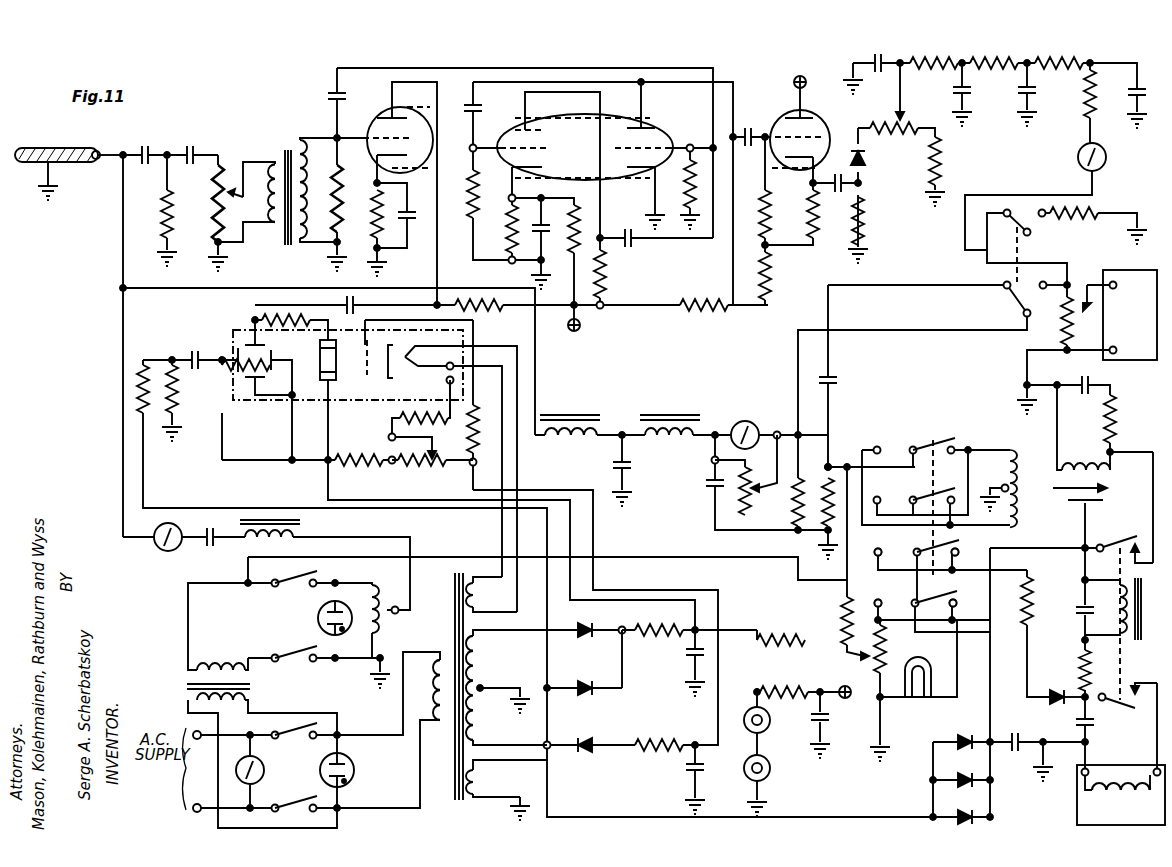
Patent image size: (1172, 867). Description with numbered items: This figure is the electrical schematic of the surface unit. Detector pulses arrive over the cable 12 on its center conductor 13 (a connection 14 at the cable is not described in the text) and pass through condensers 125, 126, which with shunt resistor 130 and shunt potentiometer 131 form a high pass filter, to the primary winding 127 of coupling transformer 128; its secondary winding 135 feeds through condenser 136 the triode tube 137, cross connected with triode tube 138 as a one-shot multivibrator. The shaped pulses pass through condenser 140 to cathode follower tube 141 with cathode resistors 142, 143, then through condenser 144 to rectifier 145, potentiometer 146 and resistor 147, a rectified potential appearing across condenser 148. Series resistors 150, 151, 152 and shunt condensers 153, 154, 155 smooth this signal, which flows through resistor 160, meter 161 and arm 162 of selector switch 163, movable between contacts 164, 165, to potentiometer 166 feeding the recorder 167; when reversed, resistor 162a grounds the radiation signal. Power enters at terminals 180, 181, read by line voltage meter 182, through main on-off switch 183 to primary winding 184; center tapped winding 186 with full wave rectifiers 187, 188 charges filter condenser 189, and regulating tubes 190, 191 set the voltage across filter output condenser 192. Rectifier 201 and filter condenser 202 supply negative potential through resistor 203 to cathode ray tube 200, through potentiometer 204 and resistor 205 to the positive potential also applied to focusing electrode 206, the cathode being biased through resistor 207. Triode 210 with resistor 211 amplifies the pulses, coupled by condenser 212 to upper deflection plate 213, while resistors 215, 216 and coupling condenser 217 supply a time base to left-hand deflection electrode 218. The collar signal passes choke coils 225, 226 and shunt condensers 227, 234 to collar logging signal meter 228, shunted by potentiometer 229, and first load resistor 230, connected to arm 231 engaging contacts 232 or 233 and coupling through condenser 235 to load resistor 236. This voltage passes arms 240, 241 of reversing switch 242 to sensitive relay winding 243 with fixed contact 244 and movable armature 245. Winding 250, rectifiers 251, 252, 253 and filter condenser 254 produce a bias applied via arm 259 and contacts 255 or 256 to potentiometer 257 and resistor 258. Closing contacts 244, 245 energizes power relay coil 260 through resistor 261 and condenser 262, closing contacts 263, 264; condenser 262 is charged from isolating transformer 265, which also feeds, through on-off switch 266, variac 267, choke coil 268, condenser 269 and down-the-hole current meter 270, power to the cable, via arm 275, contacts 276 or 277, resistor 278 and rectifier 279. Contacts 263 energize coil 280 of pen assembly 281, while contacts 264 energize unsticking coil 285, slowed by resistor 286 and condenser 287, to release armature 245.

The cable 12 is at (57, 144).
The center conductor 13 is at (111, 148).
The ground connection 14 is at (54, 170).
The condenser 125 is at (147, 146).
The condenser 126 is at (194, 146).
The primary winding 127 is at (274, 162).
The coupling transformer 128 is at (308, 132).
The shunt resistor 130 is at (165, 216).
The shunt potentiometer 131 is at (215, 208).
The secondary winding 135 is at (322, 237).
The condenser 136 is at (335, 95).
The triode tube 137 is at (670, 132).
The triode tube 138 is at (510, 119).
The condenser 140 is at (754, 126).
The cathode follower tube 141 is at (826, 130).
The cathode resistor 142 is at (768, 204).
The cathode resistor 143 is at (768, 266).
The condenser 144 is at (854, 190).
The rectifier 145 is at (866, 162).
The potentiometer 146 is at (878, 132).
The resistor 147 is at (940, 152).
The condenser 148 is at (880, 73).
The series resistor 150 is at (938, 72).
The series resistor 151 is at (1014, 76).
The series resistor 152 is at (1080, 76).
The shunt condenser 153 is at (968, 100).
The shunt condenser 154 is at (1033, 100).
The shunt condenser 155 is at (1130, 94).
The resistor 160 is at (1086, 110).
The meter 161 is at (1104, 150).
The arm 162 is at (1030, 232).
The resistor 162a is at (1090, 212).
The gamma ray-collar log selector switch 163 is at (1084, 268).
The contact 164 is at (1002, 210).
The contact 165 is at (1042, 210).
The potentiometer 166 is at (1064, 314).
The recorder 167 is at (1134, 272).
The input terminal 180 is at (190, 732).
The input terminal 181 is at (193, 810).
The line voltage meter 182 is at (294, 738).
The main on-off switch 183 is at (286, 800).
The primary winding 184 is at (432, 707).
The center tapped winding 186 is at (488, 666).
The full wave rectifier 187 is at (582, 684).
The full wave rectifier 188 is at (584, 638).
The filter condenser 189 is at (687, 658).
The regulating tube 190 is at (770, 724).
The regulating tube 191 is at (770, 770).
The filter output condenser 192 is at (824, 722).
The cathode ray tube 200 is at (233, 330).
The rectifier 201 is at (586, 738).
The filter condenser 202 is at (686, 769).
The resistor 203 is at (470, 437).
The potentiometer 204 is at (426, 464).
The resistor 205 is at (362, 464).
The focusing electrode 206 is at (334, 382).
The resistor 207 is at (400, 417).
The amplifying and isolating triode 210 is at (383, 114).
The resistor 211 is at (478, 307).
The condenser 212 is at (356, 303).
The upper deflection plate 213 is at (250, 340).
The resistor 215 is at (140, 380).
The resistor 216 is at (177, 389).
The coupling condenser 217 is at (174, 355).
The left-hand deflection electrode 218 is at (234, 354).
The series choke coil 225 is at (571, 426).
The series choke coil 226 is at (666, 426).
The shunt condenser 227 is at (628, 464).
The collar logging signal meter 228 is at (753, 423).
The potentiometer 229 is at (746, 510).
The first load resistor 230 is at (804, 477).
The arm 231 is at (1008, 302).
The contact 232 is at (1002, 281).
The contact 233 is at (1042, 290).
The shunt condenser 234 is at (714, 491).
The condenser 235 is at (832, 379).
The load resistor 236 is at (808, 540).
The arm 240 is at (926, 440).
The arm 241 is at (920, 490).
The four-pole double throw reversing switch 242 is at (947, 419).
The sensitive relay winding 243 is at (1028, 518).
The fixed contact 244 is at (1102, 500).
The movable armature 245 is at (1104, 488).
The winding 250 is at (487, 774).
The rectifier 251 is at (957, 739).
The rectifier 252 is at (952, 779).
The rectifier 253 is at (952, 814).
The filter condenser 254 is at (1020, 740).
The contact 255 is at (878, 600).
The contact 256 is at (954, 604).
The potentiometer 257 is at (866, 672).
The resistor 258 is at (838, 612).
The arm 259 is at (970, 588).
The D.C. power relay coil 260 is at (1080, 632).
The resistor 261 is at (1078, 666).
The condenser 262 is at (1092, 720).
The contacts 263 is at (1137, 683).
The contacts 264 is at (1142, 540).
The isolating transformer 265 is at (281, 693).
The on-off switch 266 is at (288, 586).
The variac 267 is at (384, 625).
The choke coil 268 is at (294, 532).
The condenser 269 is at (208, 552).
The down-the-hole current meter 270 is at (158, 552).
The arm 275 is at (952, 548).
The contact 276 is at (878, 552).
The contact 277 is at (956, 552).
The resistor 278 is at (1030, 592).
The rectifier 279 is at (1058, 693).
The coil 280 is at (1126, 780).
The collar log recording pen assembly 281 is at (1077, 808).
The unsticking coil 285 is at (1088, 454).
The resistor 286 is at (1114, 422).
The condenser 287 is at (1098, 385).